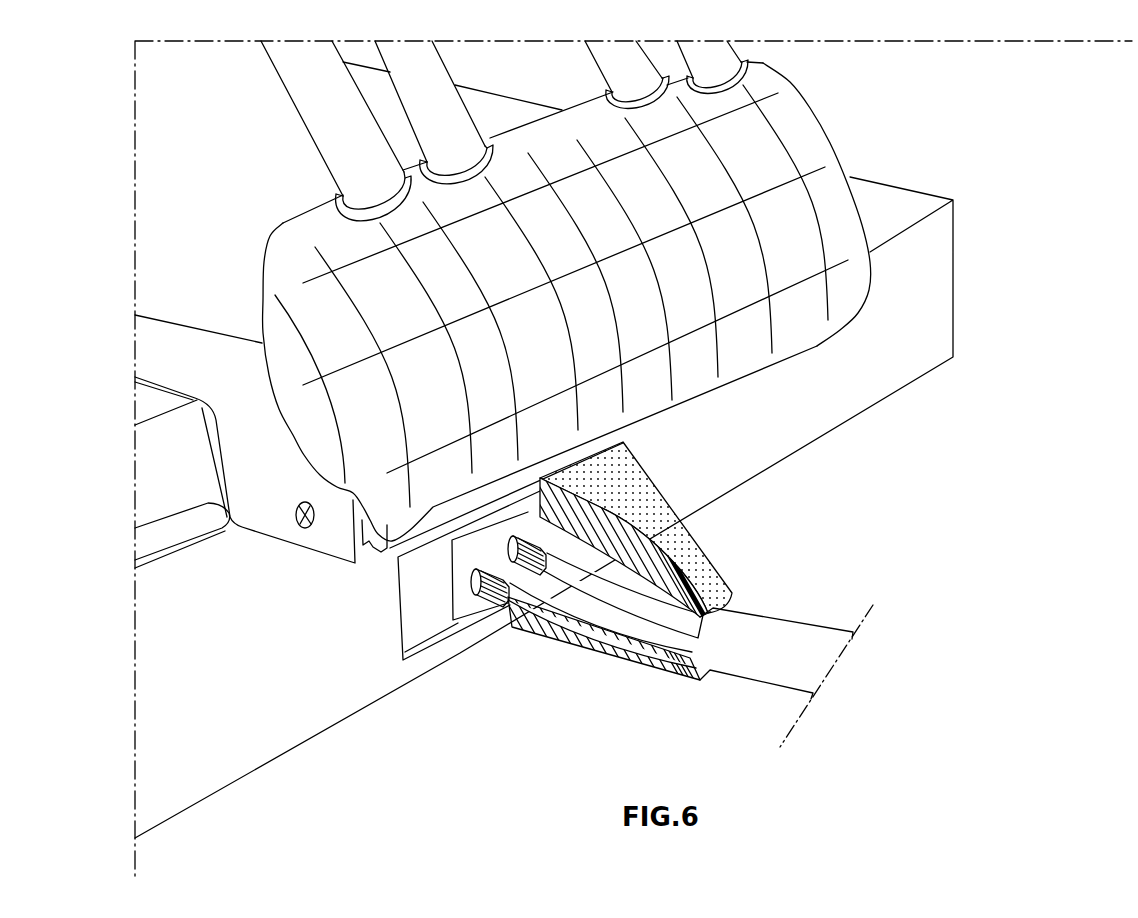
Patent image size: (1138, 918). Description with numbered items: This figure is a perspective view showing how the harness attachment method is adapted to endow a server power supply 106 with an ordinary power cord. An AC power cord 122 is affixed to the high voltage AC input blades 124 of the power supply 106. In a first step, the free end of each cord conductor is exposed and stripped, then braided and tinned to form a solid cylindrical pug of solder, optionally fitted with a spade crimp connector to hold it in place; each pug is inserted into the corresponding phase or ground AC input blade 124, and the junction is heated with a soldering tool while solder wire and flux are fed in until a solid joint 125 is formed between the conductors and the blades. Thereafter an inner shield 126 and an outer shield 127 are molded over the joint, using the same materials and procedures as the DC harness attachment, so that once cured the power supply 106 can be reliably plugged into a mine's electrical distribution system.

The power supply 106 is at (882, 212).
The AC power cord 122 is at (752, 650).
The AC input blades 124 is at (487, 562).
The solid joint 125 is at (507, 600).
The inner shield 126 is at (615, 568).
The outer shield 127 is at (652, 508).